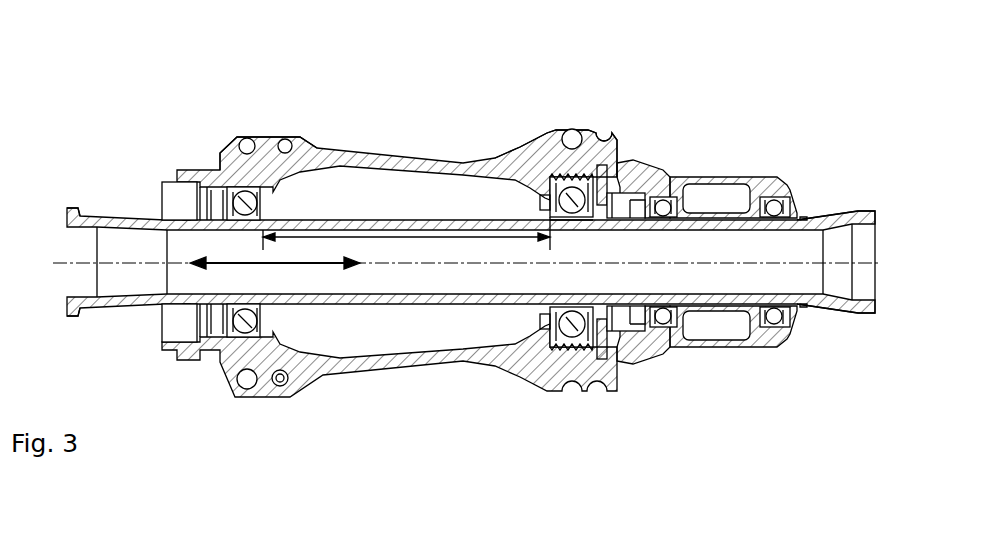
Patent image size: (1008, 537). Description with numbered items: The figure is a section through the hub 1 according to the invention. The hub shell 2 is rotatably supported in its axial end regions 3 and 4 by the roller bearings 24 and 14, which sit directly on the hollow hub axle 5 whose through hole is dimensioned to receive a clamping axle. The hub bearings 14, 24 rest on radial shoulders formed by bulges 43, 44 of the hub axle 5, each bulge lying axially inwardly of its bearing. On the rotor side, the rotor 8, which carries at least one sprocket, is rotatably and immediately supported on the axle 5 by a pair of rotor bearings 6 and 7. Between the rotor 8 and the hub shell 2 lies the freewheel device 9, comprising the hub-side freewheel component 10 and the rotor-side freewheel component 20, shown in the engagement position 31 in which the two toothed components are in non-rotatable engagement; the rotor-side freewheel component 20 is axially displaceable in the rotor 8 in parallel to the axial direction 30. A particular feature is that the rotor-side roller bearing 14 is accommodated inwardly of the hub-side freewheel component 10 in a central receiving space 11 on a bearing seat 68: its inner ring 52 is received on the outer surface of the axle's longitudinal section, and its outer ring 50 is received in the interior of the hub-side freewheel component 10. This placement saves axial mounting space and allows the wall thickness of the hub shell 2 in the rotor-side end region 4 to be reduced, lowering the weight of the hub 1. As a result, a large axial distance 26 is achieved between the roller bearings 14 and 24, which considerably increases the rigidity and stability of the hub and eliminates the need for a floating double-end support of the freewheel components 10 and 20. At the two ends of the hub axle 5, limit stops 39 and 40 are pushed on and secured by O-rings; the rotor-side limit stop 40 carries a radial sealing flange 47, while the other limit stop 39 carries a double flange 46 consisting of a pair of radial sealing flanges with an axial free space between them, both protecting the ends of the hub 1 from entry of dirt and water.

The hub 1 is at (116, 78).
The hub shell 2 is at (428, 160).
The axial end region 3 is at (245, 128).
The axial end region 4 is at (570, 125).
The hub axle 5 is at (413, 301).
The rotor bearing 6 is at (661, 224).
The rotor bearing 7 is at (772, 224).
The rotor 8 is at (783, 173).
The freewheel device 9 is at (636, 148).
The hub-side freewheel component 10 is at (560, 350).
The central receiving space 11 is at (537, 201).
The roller bearing 14 is at (574, 232).
The rotor-side freewheel component 20 is at (622, 345).
The roller bearing 24 is at (242, 230).
The axial distance 26 is at (406, 237).
The axial direction 30 is at (260, 266).
The engagement position 31 is at (620, 398).
The limit stop 39 is at (108, 220).
The limit stop 40 is at (866, 210).
The bulge 43 is at (273, 310).
The bulge 44 is at (540, 316).
The double flange 46 is at (180, 192).
The radial sealing flange 47 is at (820, 195).
The outer ring 50 is at (565, 337).
The inner ring 52 is at (563, 310).
The bearing seat 68 is at (560, 172).